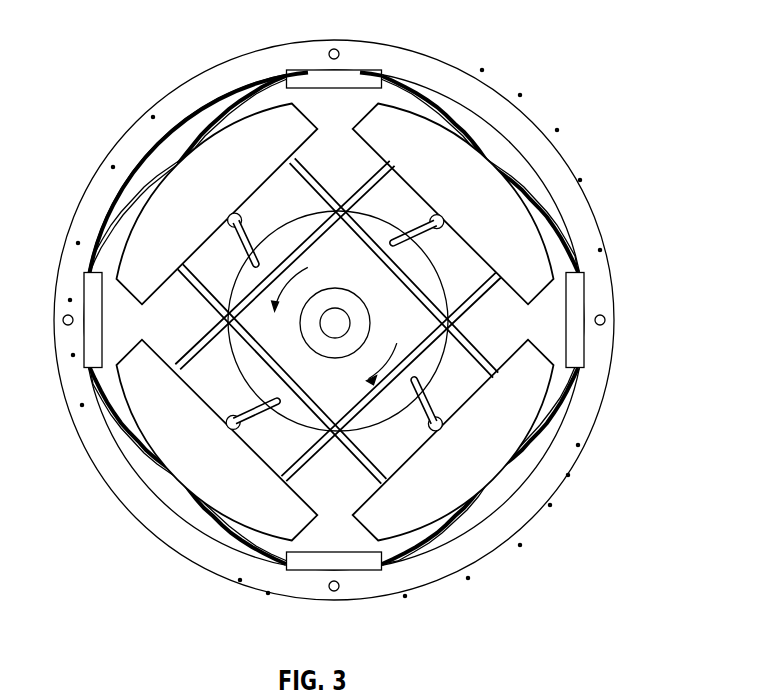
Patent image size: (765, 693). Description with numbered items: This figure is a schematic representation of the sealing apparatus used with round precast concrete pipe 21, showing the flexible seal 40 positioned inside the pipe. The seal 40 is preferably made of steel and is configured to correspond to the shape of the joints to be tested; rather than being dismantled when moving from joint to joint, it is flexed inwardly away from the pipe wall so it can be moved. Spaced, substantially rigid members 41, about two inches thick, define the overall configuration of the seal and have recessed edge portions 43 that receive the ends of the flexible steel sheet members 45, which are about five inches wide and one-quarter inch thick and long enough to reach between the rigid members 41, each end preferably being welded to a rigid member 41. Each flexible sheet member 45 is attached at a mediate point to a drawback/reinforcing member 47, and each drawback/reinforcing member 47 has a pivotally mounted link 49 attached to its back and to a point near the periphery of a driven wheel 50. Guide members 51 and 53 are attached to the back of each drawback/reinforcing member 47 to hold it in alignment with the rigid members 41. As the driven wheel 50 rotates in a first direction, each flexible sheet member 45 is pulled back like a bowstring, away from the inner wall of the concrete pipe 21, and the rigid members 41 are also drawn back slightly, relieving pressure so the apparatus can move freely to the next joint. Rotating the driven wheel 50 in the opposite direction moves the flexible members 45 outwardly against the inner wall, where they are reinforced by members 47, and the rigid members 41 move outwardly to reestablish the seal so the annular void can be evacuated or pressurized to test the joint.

The concrete pipe 21 is at (595, 392).
The flexible seal 40 is at (490, 157).
The rigid members 41 is at (343, 76).
The recessed edge portions 43 is at (288, 68).
The flexible steel sheet members 45 is at (175, 92).
The drawback/reinforcing member 47 is at (210, 204).
The pivotally mounted link 49 is at (423, 227).
The driven wheel 50 is at (365, 281).
The guide member 51 is at (205, 298).
The guide member 53 is at (337, 174).